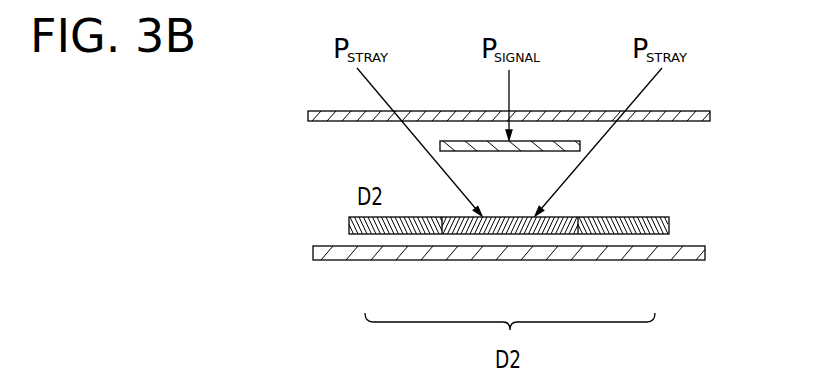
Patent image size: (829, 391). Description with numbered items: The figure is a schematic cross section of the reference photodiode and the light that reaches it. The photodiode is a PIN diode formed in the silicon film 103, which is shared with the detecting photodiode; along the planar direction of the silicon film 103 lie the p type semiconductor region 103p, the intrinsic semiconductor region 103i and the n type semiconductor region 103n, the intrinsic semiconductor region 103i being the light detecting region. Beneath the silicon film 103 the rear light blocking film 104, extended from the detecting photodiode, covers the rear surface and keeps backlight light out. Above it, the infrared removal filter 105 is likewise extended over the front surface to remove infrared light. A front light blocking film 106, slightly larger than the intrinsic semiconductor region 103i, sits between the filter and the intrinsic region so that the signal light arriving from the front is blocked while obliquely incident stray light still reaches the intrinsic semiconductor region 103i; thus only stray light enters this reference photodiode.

The silicon film 103 is at (547, 261).
The p type semiconductor region 103p is at (398, 234).
The intrinsic semiconductor region 103i is at (507, 234).
The n type semiconductor region 103n is at (620, 234).
The rear light blocking film 104 is at (705, 252).
The infrared removal filter 105 is at (710, 116).
The front light blocking film 106 is at (557, 140).